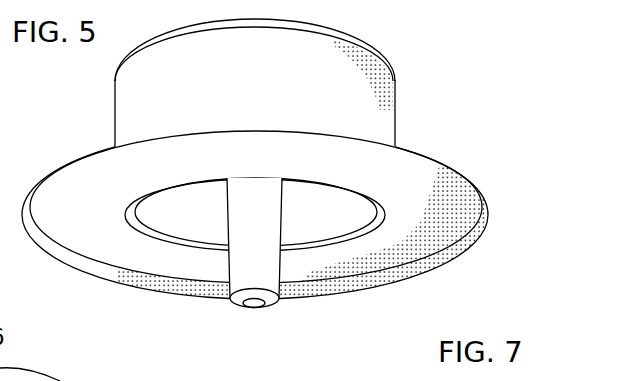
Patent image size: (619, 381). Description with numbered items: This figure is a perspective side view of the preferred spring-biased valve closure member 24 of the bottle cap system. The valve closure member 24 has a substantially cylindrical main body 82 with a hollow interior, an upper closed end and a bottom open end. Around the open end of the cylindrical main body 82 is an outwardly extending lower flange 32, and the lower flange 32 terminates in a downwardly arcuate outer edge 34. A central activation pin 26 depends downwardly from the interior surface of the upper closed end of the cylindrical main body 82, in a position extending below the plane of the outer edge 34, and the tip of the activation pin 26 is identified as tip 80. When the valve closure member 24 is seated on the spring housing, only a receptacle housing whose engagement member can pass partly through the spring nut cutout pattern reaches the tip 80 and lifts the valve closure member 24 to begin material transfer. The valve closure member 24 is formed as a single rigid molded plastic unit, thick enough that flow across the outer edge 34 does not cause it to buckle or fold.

The valve closure member 24 is at (293, 199).
The cylindrical main body 82 is at (138, 97).
The outer edge 34 is at (488, 198).
The lower flange 32 is at (450, 228).
The activation pin 26 is at (210, 279).
The tip of activation pin 80 is at (255, 308).